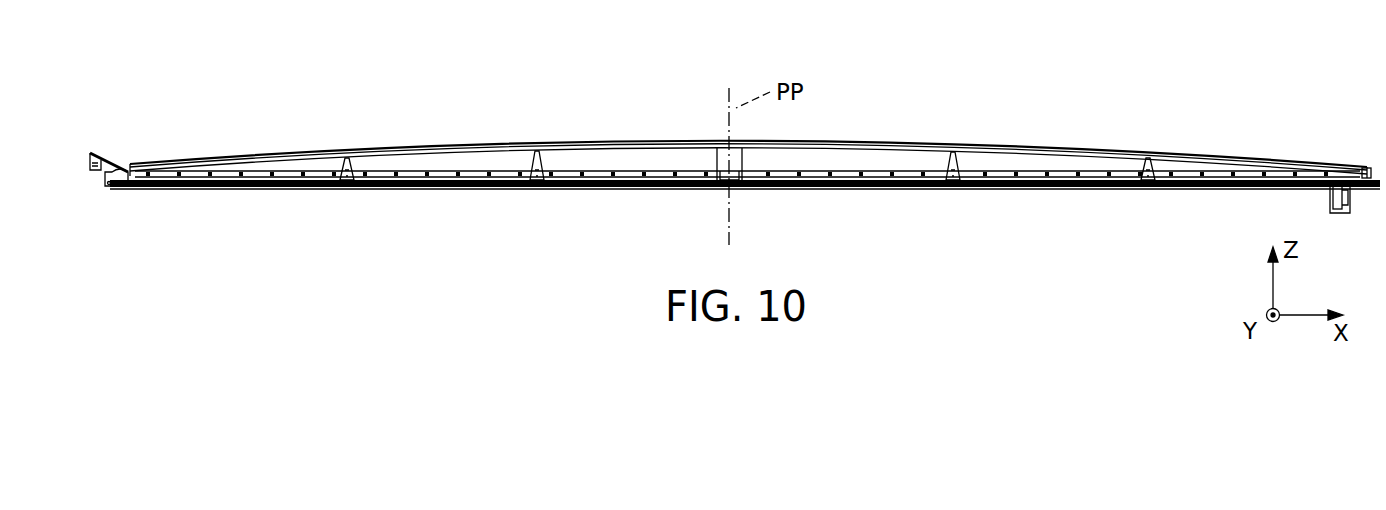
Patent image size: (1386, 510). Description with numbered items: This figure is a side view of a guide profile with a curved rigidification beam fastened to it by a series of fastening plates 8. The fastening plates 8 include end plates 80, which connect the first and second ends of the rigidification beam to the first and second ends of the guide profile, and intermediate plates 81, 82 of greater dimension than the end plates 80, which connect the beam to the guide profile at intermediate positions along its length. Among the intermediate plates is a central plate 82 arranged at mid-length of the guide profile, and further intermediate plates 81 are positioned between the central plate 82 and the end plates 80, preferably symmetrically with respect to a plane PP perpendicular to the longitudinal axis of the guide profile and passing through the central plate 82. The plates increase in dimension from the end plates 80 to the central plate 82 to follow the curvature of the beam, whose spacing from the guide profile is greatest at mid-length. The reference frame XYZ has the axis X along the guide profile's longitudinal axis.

The end plate 80 is at (128, 175).
The intermediate plate 81 is at (343, 185).
The fastening plate 8 is at (955, 188).
The central plate 82 is at (726, 170).